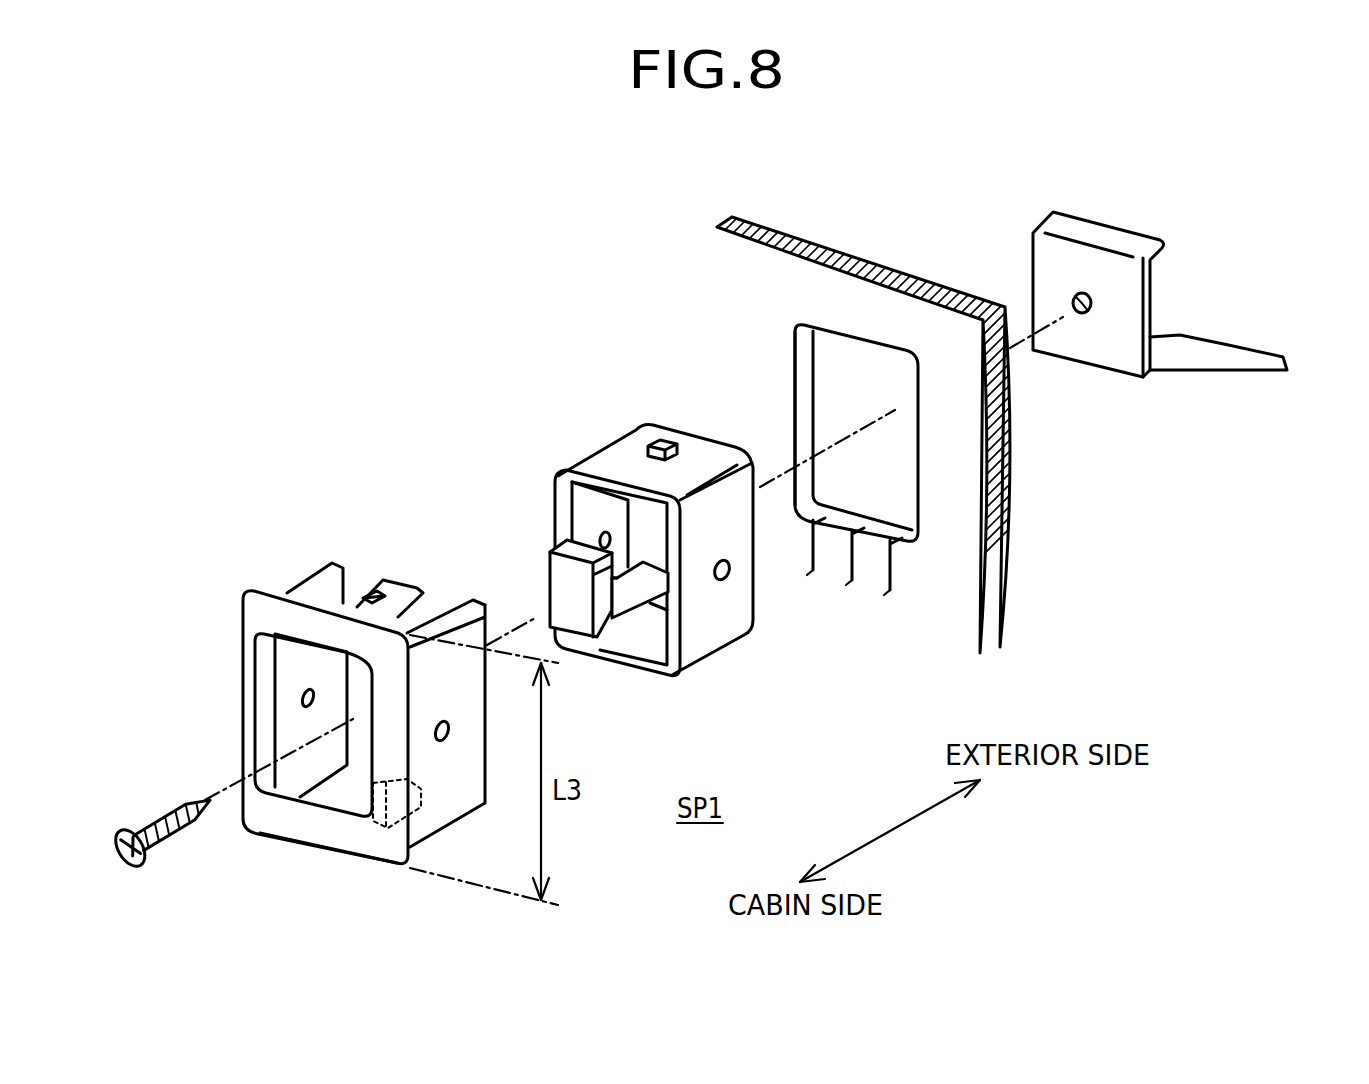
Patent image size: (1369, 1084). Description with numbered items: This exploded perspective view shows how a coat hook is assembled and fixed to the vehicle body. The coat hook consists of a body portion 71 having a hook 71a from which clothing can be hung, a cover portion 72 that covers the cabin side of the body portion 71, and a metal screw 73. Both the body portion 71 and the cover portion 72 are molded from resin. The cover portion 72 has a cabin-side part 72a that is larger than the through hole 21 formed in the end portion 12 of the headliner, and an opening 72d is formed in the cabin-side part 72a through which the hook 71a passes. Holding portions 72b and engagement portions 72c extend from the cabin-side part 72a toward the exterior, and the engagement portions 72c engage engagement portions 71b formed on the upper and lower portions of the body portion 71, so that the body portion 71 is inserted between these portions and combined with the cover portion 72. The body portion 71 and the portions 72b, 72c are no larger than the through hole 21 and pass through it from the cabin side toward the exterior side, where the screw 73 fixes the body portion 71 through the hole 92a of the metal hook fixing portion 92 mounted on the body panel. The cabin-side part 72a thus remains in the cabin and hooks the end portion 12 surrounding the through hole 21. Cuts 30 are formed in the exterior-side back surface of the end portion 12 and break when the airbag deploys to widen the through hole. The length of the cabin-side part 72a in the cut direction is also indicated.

The cover portion 72 is at (312, 674).
The cabin-side part 72a is at (243, 610).
The holding portions 72b is at (310, 577).
The engagement portions 72c is at (392, 577).
The opening 72d is at (295, 803).
The metal screw 73 is at (168, 807).
The body portion 71 is at (618, 510).
The hook 71a is at (550, 560).
The engagement portions 71b is at (662, 441).
The through hole 21 is at (903, 457).
The cuts 30 is at (813, 567).
The end portion 12 is at (963, 568).
The hook fixing portion 92 is at (1122, 348).
The hole 92a is at (1077, 303).